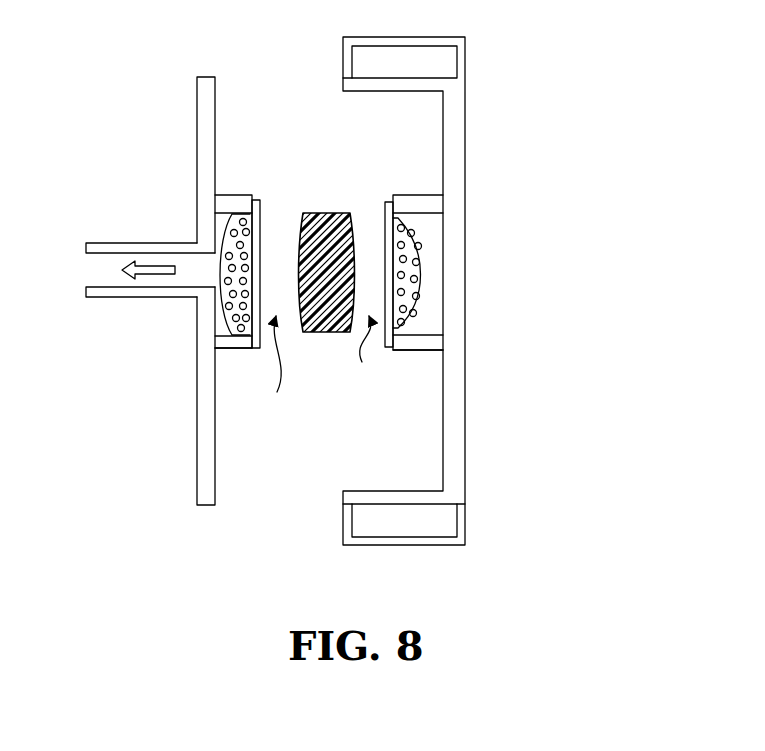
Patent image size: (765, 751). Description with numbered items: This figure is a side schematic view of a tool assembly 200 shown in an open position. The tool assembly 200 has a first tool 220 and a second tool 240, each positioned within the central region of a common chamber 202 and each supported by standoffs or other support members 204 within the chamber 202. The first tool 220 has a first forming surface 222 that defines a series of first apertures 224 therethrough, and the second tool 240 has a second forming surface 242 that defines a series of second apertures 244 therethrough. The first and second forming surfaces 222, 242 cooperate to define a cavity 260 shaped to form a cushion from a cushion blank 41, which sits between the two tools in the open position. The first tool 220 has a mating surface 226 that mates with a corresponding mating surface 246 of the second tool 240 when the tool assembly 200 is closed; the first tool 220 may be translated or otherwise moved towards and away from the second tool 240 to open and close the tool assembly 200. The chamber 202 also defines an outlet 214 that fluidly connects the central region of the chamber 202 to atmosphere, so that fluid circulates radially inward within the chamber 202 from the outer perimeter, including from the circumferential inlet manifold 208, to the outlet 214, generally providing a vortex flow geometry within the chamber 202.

The cushion blank 41 is at (330, 213).
The tool assembly 200 is at (387, 292).
The chamber 202 is at (418, 432).
The support members 204 is at (233, 348).
The circumferential inlet manifold 208 is at (433, 62).
The outlet 214 is at (120, 297).
The first tool 220 is at (465, 135).
The first forming surface 222 is at (423, 280).
The first apertures 224 is at (412, 255).
The mating surface 226 is at (386, 230).
The second tool 240 is at (198, 135).
The second forming surface 242 is at (232, 290).
The second apertures 244 is at (243, 253).
The mating surface 246 is at (260, 229).
The cavity 260 is at (323, 370).